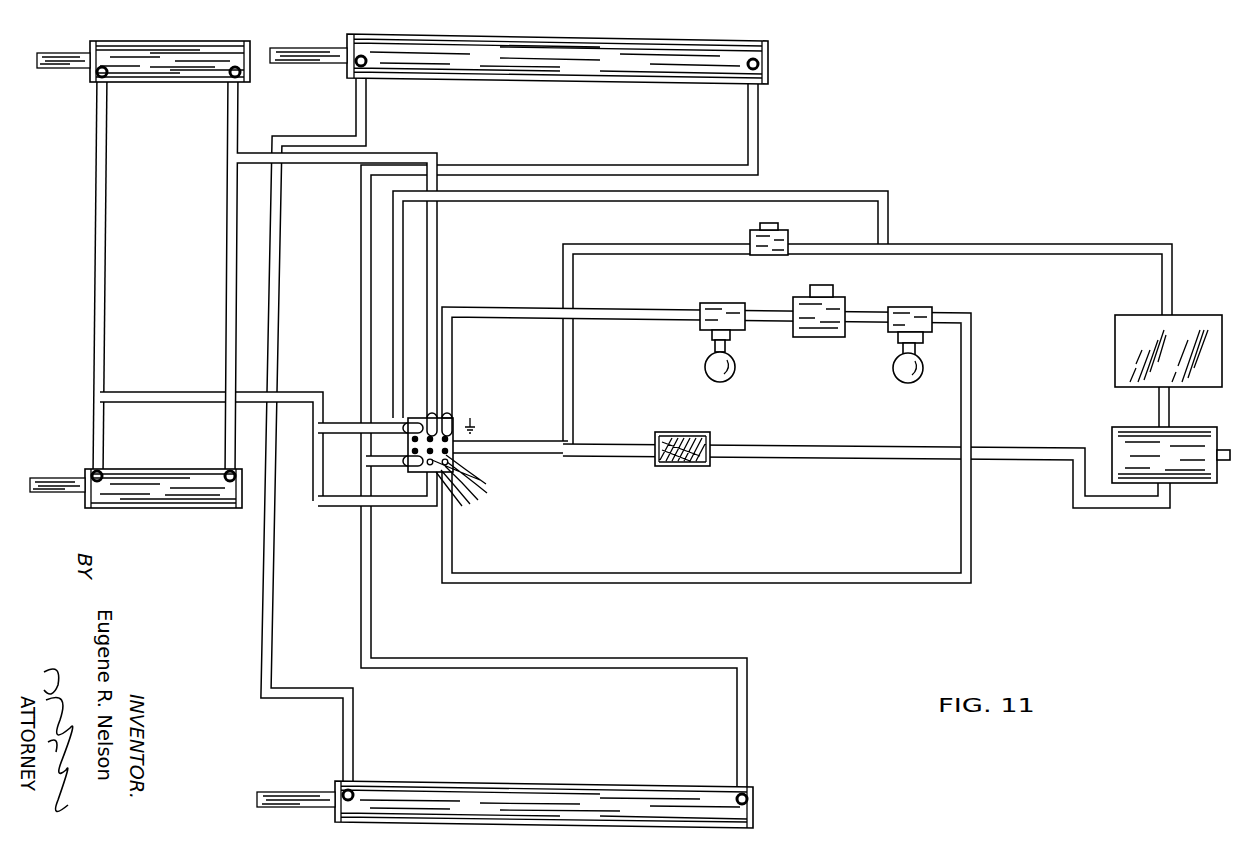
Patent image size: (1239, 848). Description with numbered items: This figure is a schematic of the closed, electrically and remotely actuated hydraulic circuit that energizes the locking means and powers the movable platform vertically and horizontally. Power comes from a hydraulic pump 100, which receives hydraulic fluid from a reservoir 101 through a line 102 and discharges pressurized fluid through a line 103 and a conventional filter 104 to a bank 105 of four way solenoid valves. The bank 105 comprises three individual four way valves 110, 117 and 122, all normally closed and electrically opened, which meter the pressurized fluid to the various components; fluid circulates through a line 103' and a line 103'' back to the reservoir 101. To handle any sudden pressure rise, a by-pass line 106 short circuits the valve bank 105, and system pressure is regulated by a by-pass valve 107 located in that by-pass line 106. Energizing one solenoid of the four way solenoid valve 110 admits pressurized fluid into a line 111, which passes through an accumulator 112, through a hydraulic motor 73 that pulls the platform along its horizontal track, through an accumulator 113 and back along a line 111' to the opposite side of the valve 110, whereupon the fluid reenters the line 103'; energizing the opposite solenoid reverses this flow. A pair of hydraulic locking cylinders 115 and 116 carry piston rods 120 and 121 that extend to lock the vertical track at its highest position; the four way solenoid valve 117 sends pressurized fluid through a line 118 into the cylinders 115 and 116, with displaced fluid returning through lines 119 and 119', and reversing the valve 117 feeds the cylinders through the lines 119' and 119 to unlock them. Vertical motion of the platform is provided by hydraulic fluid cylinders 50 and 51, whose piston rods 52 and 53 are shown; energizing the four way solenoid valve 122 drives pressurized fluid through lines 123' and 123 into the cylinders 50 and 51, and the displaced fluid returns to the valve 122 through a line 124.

The hydraulic fluid cylinder 50 is at (594, 80).
The hydraulic fluid cylinder 51 is at (535, 784).
The piston rod 52 is at (301, 48).
The piston rod 53 is at (277, 794).
The hydraulic motor 73 is at (847, 312).
The hydraulic pump 100 is at (1114, 440).
The reservoir 101 is at (1115, 344).
The line 102 is at (1160, 402).
The line 103 is at (808, 460).
The line 103' is at (640, 307).
The line 103'' is at (977, 268).
The filter 104 is at (665, 432).
The bank of four way solenoid valves 105 is at (496, 427).
The by-pass line 106 is at (575, 405).
The by-pass valve 107 is at (762, 255).
The four way solenoid valve 110 is at (449, 418).
The line 111 is at (706, 428).
The line 111' is at (833, 558).
The accumulator 112 is at (706, 302).
The accumulator 113 is at (905, 308).
The hydraulic locking cylinder 115 is at (190, 53).
The hydraulic locking cylinder 116 is at (141, 472).
The four way solenoid valve 117 is at (426, 418).
The line 118 is at (237, 114).
The line 119 is at (219, 435).
The line 119' is at (90, 275).
The piston rod 120 is at (41, 55).
The piston rod 121 is at (37, 480).
The four way solenoid valve 122 is at (411, 470).
The line 123 is at (368, 444).
The line 123' is at (313, 427).
The line 124 is at (565, 172).